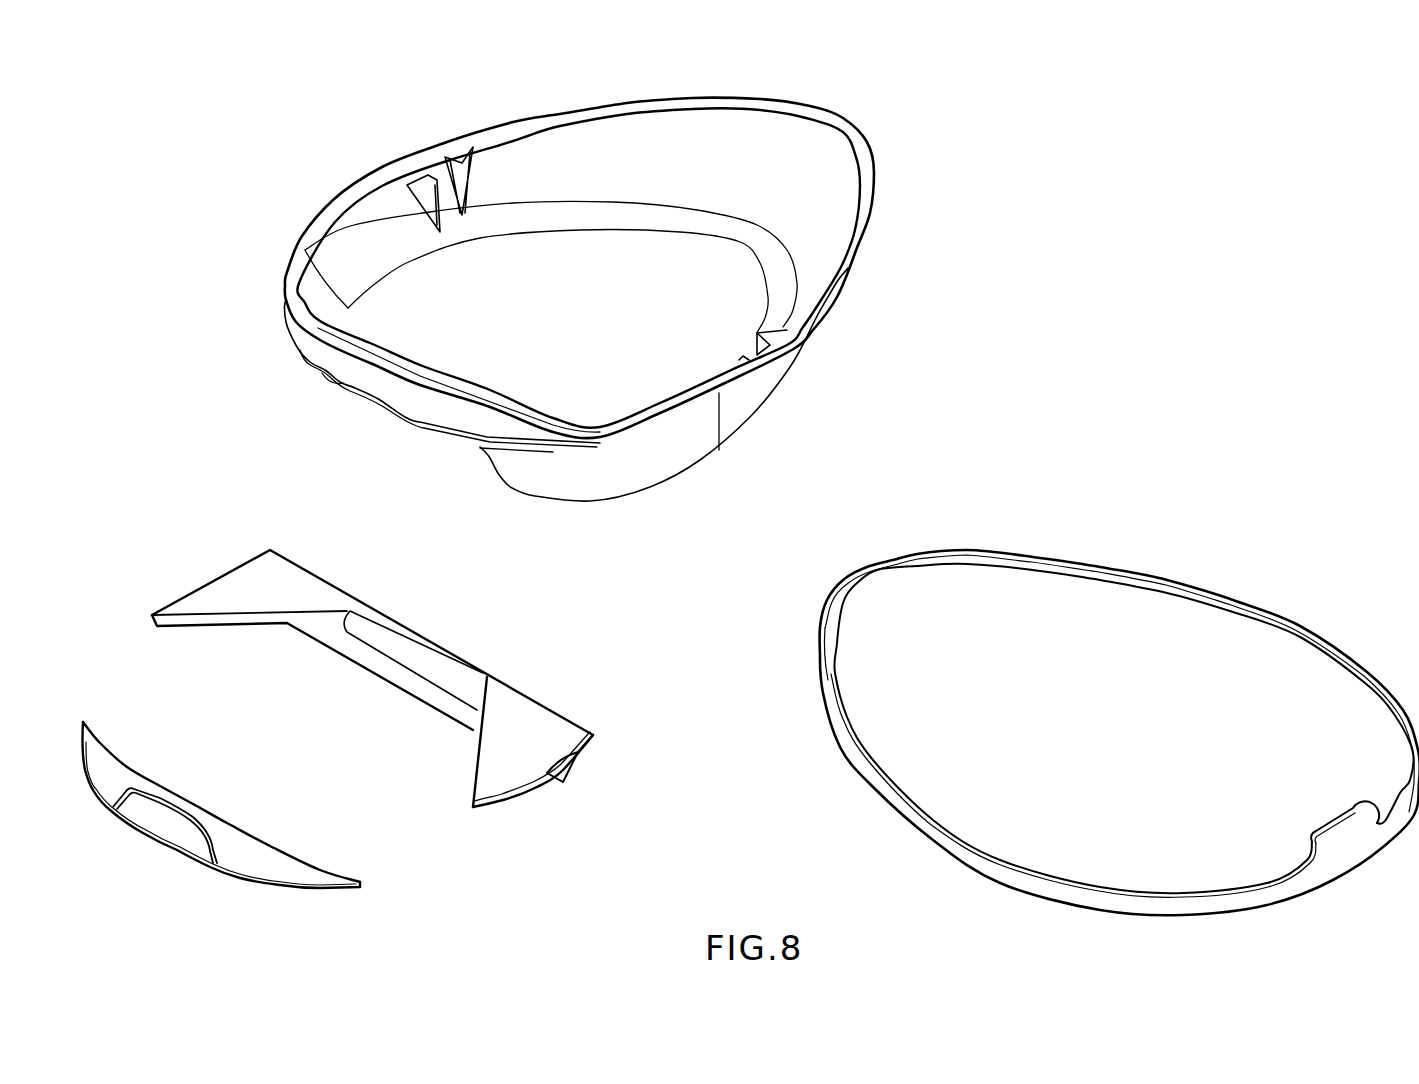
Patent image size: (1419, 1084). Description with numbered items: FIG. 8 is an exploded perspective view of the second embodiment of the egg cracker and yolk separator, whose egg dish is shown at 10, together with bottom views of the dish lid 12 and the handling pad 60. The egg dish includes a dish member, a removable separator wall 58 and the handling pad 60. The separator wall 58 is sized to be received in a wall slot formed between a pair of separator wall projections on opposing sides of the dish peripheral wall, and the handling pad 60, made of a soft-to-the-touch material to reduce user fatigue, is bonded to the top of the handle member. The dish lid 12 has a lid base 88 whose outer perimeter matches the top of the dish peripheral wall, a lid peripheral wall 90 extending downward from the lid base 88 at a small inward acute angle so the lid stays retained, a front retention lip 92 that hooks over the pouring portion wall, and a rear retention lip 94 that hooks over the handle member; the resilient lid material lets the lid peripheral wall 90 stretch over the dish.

The housing 10 is at (407, 114).
The dish lid 12 is at (1148, 540).
The removable separator wall 58 is at (420, 623).
The handling pad 60 is at (240, 840).
The lid base 88 is at (1131, 747).
The lid peripheral wall 90 is at (938, 837).
The front retention lip 92 is at (888, 557).
The rear retention lip 94 is at (1340, 847).